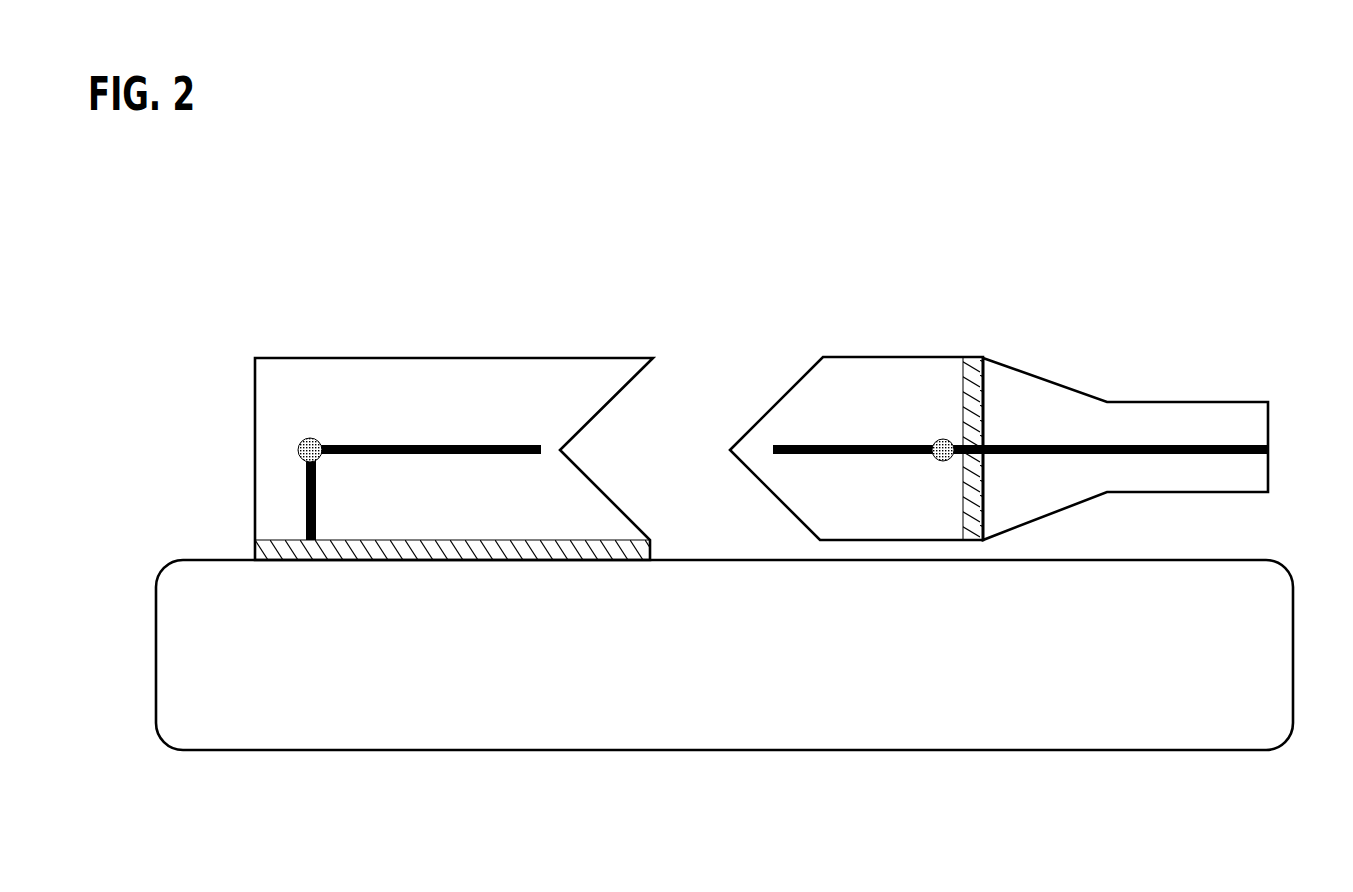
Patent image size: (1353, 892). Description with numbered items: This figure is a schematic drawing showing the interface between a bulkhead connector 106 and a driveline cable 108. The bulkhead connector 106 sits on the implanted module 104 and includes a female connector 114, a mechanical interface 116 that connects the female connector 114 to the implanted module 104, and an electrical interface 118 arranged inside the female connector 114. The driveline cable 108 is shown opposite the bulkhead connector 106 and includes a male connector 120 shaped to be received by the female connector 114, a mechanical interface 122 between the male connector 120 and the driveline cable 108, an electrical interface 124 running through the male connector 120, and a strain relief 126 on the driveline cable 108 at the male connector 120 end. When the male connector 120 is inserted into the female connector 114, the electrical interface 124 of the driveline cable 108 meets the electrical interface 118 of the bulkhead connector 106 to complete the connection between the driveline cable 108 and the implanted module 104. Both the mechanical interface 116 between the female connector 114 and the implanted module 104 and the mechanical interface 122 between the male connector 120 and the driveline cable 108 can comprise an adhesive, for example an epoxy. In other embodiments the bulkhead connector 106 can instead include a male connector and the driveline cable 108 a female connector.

The implanted module 104 is at (187, 672).
The bulkhead connector 106 is at (235, 288).
The driveline cable 108 is at (1267, 378).
The female connector 114 is at (643, 430).
The mechanical interface 116 is at (242, 542).
The electrical interface 118 is at (313, 430).
The male connector 120 is at (788, 370).
The mechanical interface 122 is at (982, 348).
The electrical interface 124 is at (935, 423).
The strain relief 126 is at (1040, 383).